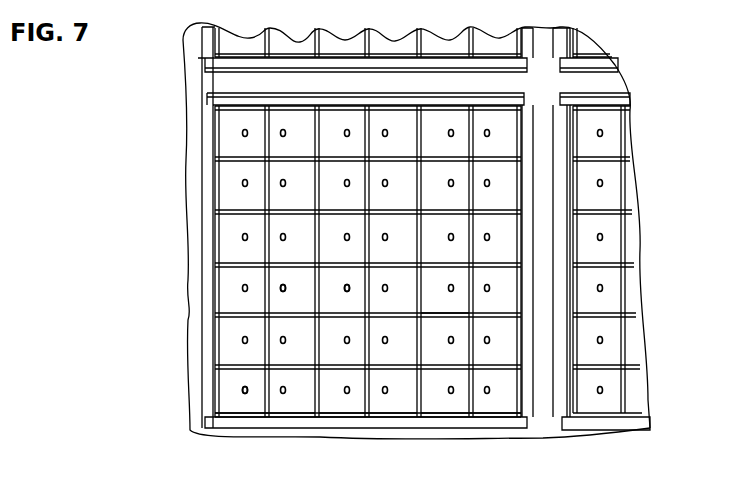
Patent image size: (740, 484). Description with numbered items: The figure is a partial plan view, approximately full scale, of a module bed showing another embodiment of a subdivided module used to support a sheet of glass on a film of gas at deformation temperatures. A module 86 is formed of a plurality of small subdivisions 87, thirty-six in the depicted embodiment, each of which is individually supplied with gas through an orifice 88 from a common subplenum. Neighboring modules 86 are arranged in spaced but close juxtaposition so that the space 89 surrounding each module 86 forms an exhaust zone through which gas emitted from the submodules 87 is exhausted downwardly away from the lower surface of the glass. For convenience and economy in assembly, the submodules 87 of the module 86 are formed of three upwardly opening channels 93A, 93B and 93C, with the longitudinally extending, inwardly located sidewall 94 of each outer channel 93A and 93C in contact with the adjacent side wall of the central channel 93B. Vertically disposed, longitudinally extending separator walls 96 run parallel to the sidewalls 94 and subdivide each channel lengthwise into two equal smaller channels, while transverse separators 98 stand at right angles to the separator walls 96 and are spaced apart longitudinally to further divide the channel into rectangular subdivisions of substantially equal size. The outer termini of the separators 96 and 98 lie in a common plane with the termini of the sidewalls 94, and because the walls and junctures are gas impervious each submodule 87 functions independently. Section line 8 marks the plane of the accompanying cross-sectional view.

The section line 8- 8 is at (247, 269).
The module 86 is at (211, 292).
The subdivision 87 is at (470, 211).
The orifice 88 is at (448, 287).
The space 89 is at (545, 400).
The outer channel 93A is at (276, 417).
The central channel 93B is at (380, 418).
The outer channel 93C is at (482, 417).
The sidewall 94 is at (312, 378).
The separator wall 96 is at (363, 273).
The transverse separator 98 is at (445, 318).